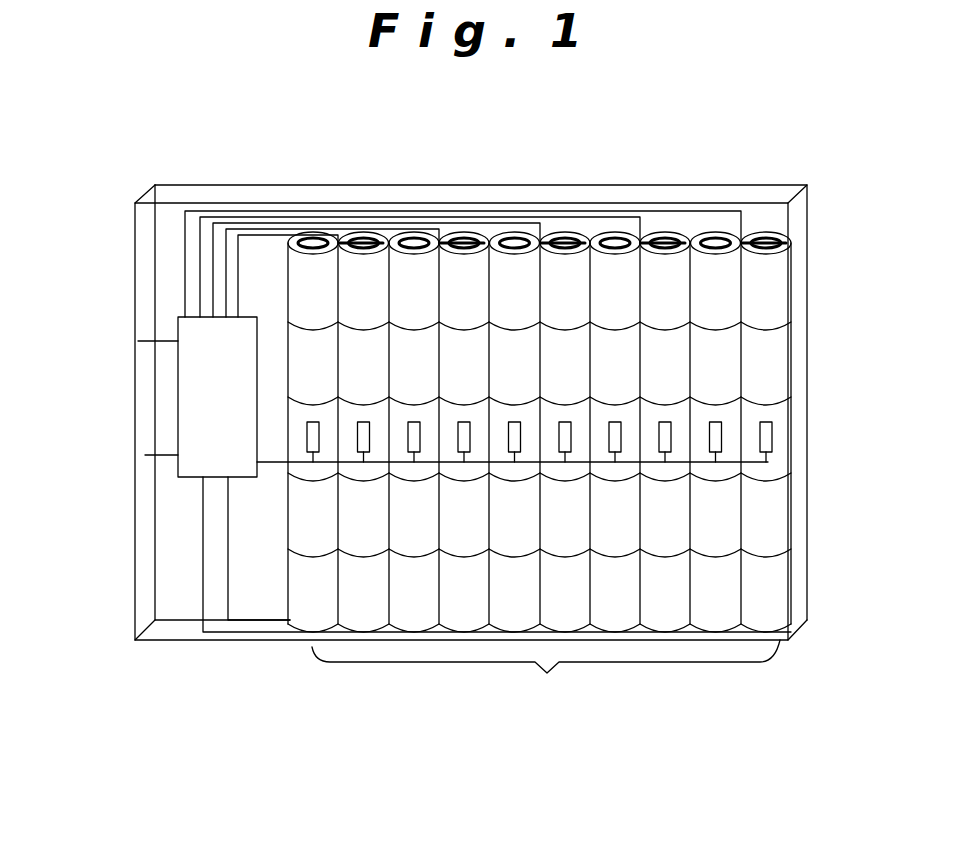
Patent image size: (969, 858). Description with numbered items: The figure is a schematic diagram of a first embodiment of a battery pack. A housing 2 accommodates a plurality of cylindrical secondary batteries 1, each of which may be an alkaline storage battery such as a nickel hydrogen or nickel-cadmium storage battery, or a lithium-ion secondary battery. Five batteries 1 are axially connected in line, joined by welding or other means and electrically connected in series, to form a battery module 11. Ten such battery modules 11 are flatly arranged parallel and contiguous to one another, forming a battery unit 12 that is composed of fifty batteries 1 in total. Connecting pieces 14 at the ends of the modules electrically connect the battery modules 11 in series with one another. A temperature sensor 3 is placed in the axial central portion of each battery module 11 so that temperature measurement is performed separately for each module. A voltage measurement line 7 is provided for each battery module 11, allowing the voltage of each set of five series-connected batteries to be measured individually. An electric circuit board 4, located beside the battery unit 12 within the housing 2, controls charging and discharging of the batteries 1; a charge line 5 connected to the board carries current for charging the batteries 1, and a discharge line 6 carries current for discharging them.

The cylindrical secondary battery 1 is at (562, 278).
The housing 2 is at (758, 178).
The temperature sensor 3 is at (670, 425).
The electric circuit board 4 is at (195, 395).
The charge line 5 is at (153, 340).
The discharge line 6 is at (167, 455).
The voltage measurement line 7 is at (463, 210).
The battery module 11 is at (317, 598).
The battery unit 12 is at (546, 678).
The connecting piece 14 is at (428, 245).